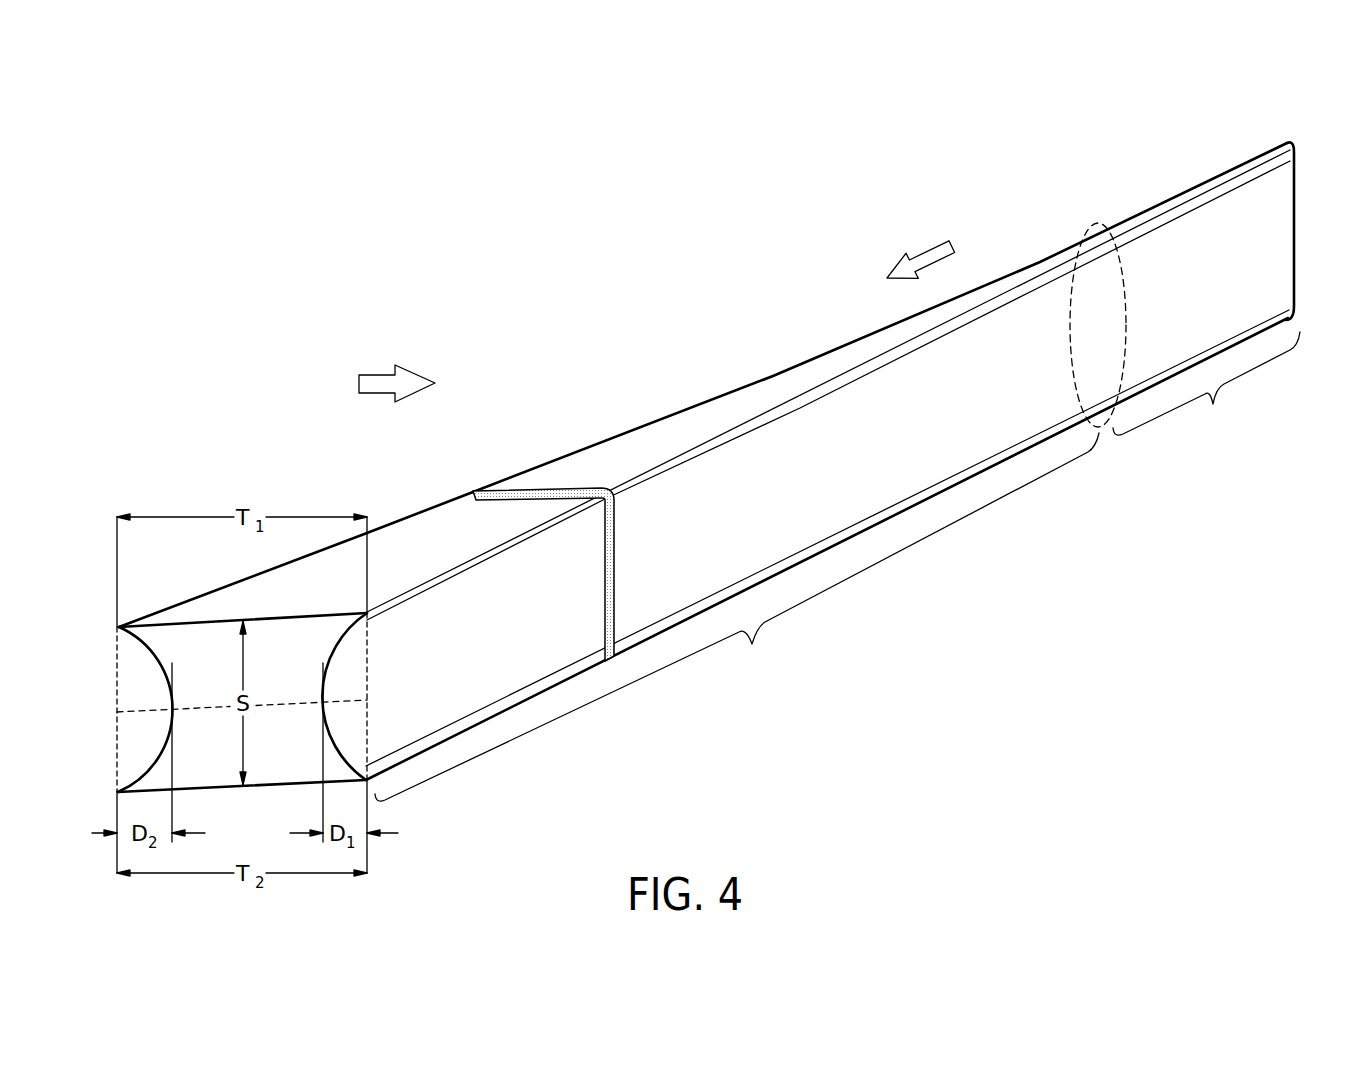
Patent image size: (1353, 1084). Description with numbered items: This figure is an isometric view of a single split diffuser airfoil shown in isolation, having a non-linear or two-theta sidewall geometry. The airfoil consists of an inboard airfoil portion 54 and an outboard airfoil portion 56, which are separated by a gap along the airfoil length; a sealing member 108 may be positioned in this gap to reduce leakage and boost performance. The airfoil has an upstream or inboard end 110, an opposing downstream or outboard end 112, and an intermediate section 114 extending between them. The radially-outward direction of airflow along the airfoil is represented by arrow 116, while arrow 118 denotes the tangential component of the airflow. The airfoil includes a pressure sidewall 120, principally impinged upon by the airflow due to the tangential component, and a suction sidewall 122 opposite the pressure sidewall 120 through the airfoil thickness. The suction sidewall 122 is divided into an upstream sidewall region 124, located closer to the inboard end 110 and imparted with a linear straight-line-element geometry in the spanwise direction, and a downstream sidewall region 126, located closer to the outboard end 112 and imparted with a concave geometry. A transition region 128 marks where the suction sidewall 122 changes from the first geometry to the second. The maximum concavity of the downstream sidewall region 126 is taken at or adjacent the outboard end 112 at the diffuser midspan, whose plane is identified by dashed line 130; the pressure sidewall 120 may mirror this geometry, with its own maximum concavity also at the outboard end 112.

The inboard airfoil portion 54 is at (648, 425).
The outboard airfoil portion 56 is at (415, 518).
The sealing member 108 is at (614, 557).
The inboard end 110 is at (719, 445).
The outboard end 112 is at (203, 607).
The intermediate section 114 is at (730, 410).
The arrow 116 is at (937, 242).
The arrow 118 is at (378, 372).
The pressure sidewall 120 is at (152, 674).
The suction sidewall 122 is at (777, 498).
The upstream sidewall region 124 is at (1206, 386).
The downstream sidewall region 126 is at (737, 617).
The transition region 128 is at (1100, 223).
The dashed line 130 is at (300, 700).